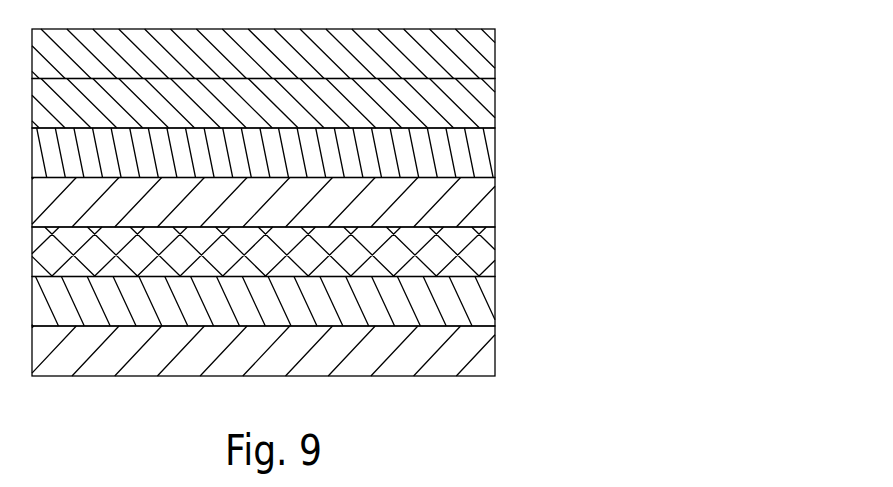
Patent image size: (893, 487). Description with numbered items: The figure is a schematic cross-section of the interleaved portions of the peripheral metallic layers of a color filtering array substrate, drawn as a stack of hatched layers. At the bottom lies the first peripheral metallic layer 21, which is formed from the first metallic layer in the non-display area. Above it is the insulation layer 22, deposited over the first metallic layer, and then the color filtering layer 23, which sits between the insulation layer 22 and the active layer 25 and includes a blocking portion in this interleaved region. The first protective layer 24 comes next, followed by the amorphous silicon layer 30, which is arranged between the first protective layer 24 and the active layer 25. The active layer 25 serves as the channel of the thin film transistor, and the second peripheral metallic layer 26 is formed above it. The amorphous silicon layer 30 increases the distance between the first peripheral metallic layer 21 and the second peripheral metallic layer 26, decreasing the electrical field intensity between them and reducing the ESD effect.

The first peripheral metallic layer 21 is at (480, 352).
The insulation layer 22 is at (480, 302).
The color filtering layer 23 is at (480, 252).
The first protective layer 24 is at (480, 202).
The amorphous silicon layer 30 is at (480, 153).
The active layer 25 is at (480, 102).
The second peripheral metallic layer 26 is at (480, 53).